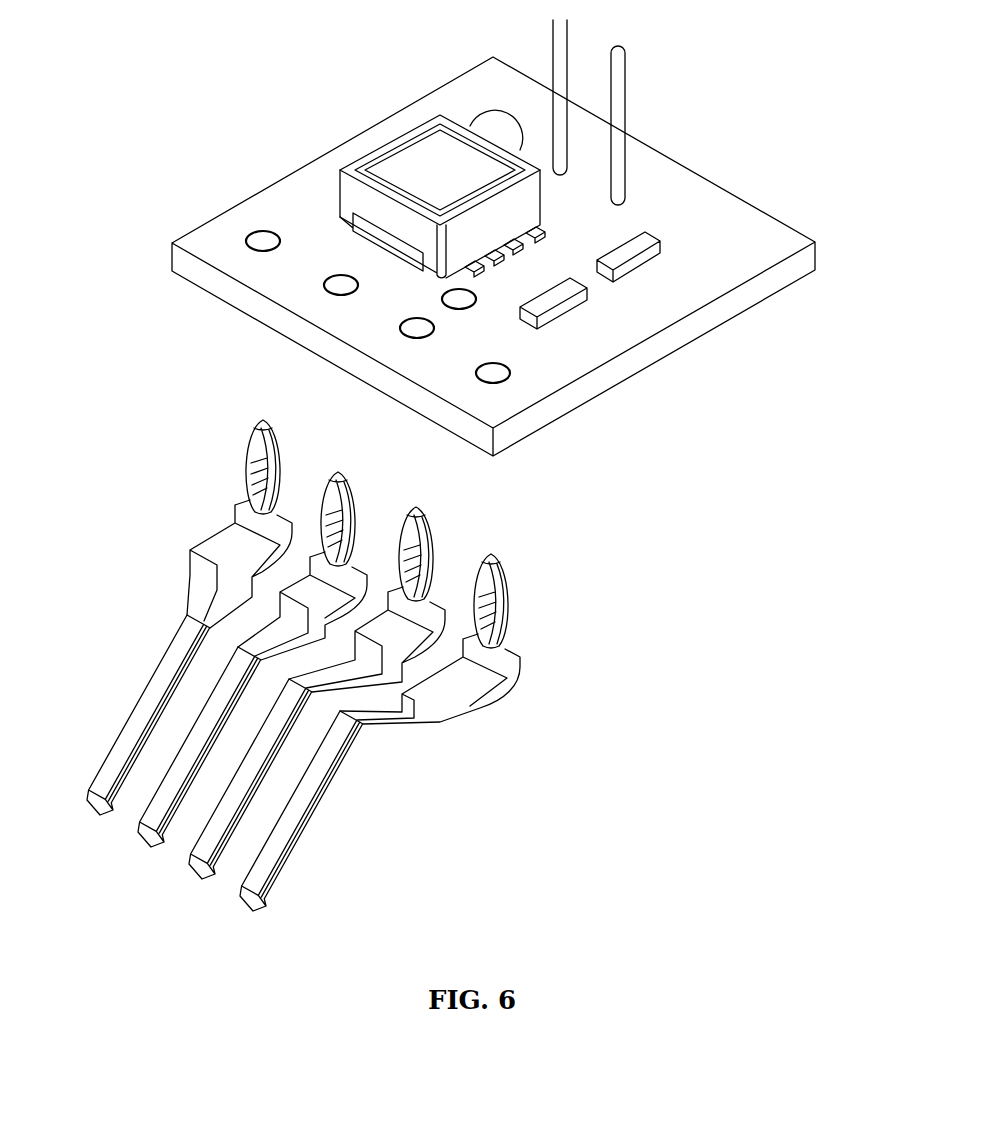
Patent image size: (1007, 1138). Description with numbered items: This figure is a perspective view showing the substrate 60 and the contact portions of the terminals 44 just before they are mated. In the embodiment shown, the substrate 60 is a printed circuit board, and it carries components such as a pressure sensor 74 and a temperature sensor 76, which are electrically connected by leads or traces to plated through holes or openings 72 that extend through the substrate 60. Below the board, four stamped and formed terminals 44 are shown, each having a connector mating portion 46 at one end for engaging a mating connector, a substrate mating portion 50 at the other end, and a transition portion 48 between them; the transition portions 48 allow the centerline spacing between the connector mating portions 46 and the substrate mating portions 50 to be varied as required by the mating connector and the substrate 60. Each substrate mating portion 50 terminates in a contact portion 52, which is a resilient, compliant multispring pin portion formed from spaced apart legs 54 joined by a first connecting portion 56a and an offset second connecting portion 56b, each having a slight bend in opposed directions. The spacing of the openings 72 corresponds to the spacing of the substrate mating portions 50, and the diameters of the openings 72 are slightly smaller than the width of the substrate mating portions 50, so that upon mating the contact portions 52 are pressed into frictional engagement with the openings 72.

The terminals 44 is at (409, 672).
The connector mating portions 46 is at (247, 904).
The transition portions 48 is at (297, 615).
The substrate mating portions 50 is at (607, 638).
The contact portions 52 is at (513, 595).
The legs 54 is at (247, 470).
The first connecting portion 56a is at (433, 555).
The second connecting portion 56b is at (436, 565).
The substrate 60 is at (737, 228).
The plated through holes 72 is at (333, 292).
The pressure sensor 74 is at (410, 167).
The temperature sensor 76 is at (625, 88).